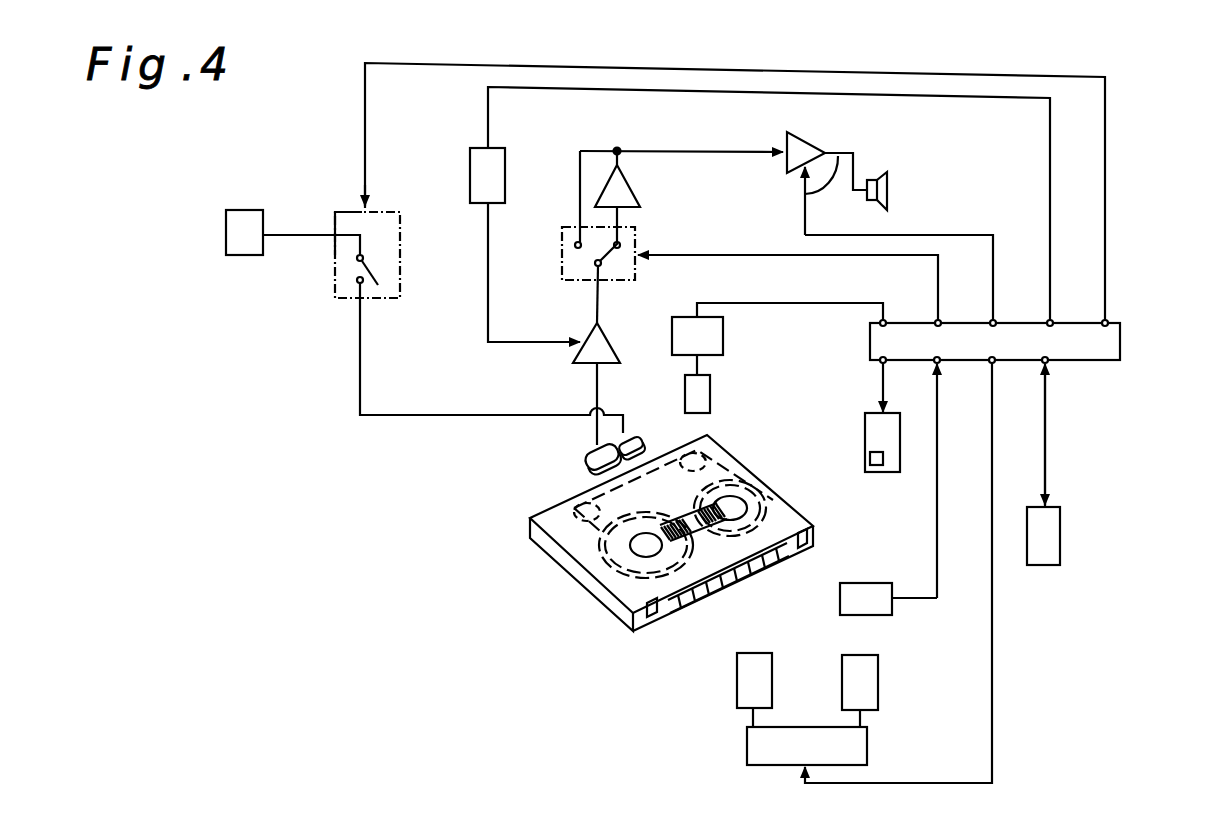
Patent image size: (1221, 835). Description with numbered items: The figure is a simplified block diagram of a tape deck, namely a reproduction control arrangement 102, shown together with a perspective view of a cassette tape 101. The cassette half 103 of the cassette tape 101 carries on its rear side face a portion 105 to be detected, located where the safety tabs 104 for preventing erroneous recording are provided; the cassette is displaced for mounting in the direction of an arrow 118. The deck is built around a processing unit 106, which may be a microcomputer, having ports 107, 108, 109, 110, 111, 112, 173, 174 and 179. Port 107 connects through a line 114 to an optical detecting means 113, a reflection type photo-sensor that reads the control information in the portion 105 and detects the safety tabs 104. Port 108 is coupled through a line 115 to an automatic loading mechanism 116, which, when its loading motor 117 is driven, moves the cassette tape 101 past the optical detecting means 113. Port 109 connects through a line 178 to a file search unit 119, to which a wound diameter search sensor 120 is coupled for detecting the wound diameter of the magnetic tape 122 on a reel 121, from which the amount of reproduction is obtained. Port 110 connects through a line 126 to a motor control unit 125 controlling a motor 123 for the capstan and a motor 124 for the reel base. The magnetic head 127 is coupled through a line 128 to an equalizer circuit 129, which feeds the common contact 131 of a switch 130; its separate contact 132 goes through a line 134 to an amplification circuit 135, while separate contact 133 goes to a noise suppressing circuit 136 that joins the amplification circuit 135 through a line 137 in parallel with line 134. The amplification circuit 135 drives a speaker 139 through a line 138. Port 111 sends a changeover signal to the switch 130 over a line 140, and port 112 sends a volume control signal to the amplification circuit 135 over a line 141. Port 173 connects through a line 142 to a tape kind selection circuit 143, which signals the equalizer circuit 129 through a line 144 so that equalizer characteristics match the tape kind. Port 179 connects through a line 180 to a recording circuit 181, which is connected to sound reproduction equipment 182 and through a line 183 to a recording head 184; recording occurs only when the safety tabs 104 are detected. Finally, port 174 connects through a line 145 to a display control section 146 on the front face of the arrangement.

The cassette tape 101 is at (493, 527).
The reproduction control arrangement 102 is at (1115, 240).
The cassette half 103 is at (703, 450).
The safety tabs 104 is at (670, 615).
The portion to be detected 105 is at (713, 582).
The processing unit 106 is at (1090, 360).
The port 107 is at (933, 363).
The port 108 is at (880, 363).
The port 109 is at (897, 313).
The port 110 is at (988, 365).
The port 111 is at (942, 321).
The port 112 is at (997, 321).
The optical detecting means 113 is at (857, 608).
The line 114 is at (938, 536).
The line 115 is at (882, 388).
The automatic loading mechanism 116 is at (877, 430).
The loading motor 117 is at (876, 466).
The arrow 118 is at (533, 597).
The file search unit 119 is at (697, 327).
The wound diameter search sensor 120 is at (700, 395).
The reel 121 is at (727, 513).
The magnetic tape 122 is at (676, 512).
The motor 123 is at (750, 678).
The motor 124 is at (862, 673).
The motor control unit 125 is at (845, 745).
The line 126 is at (990, 648).
The magnetic head 127 is at (585, 455).
The line 128 is at (609, 388).
The equalizer circuit 129 is at (607, 345).
The switch 130 is at (575, 228).
The common contact 131 is at (596, 264).
The separate contact 132 is at (562, 229).
The separate contact 133 is at (620, 244).
The line 134 is at (580, 178).
The amplification circuit 135 is at (800, 152).
The noise suppressing circuit 136 is at (625, 192).
The line 137 is at (620, 154).
The line 138 is at (803, 194).
The speaker 139 is at (888, 185).
The line 140 is at (852, 258).
The line 141 is at (899, 245).
The line 142 is at (700, 88).
The tape kind selection circuit 143 is at (475, 192).
The line 144 is at (487, 238).
The line 145 is at (1054, 440).
The display control section 146 is at (1057, 550).
The port 173 is at (1062, 313).
The port 174 is at (1040, 363).
The line 178 is at (835, 303).
The port 179 is at (1118, 313).
The line 180 is at (960, 77).
The recording circuit 181 is at (368, 218).
The sound reproduction equipment 182 is at (242, 222).
The line 183 is at (445, 400).
The recording head 184 is at (639, 446).